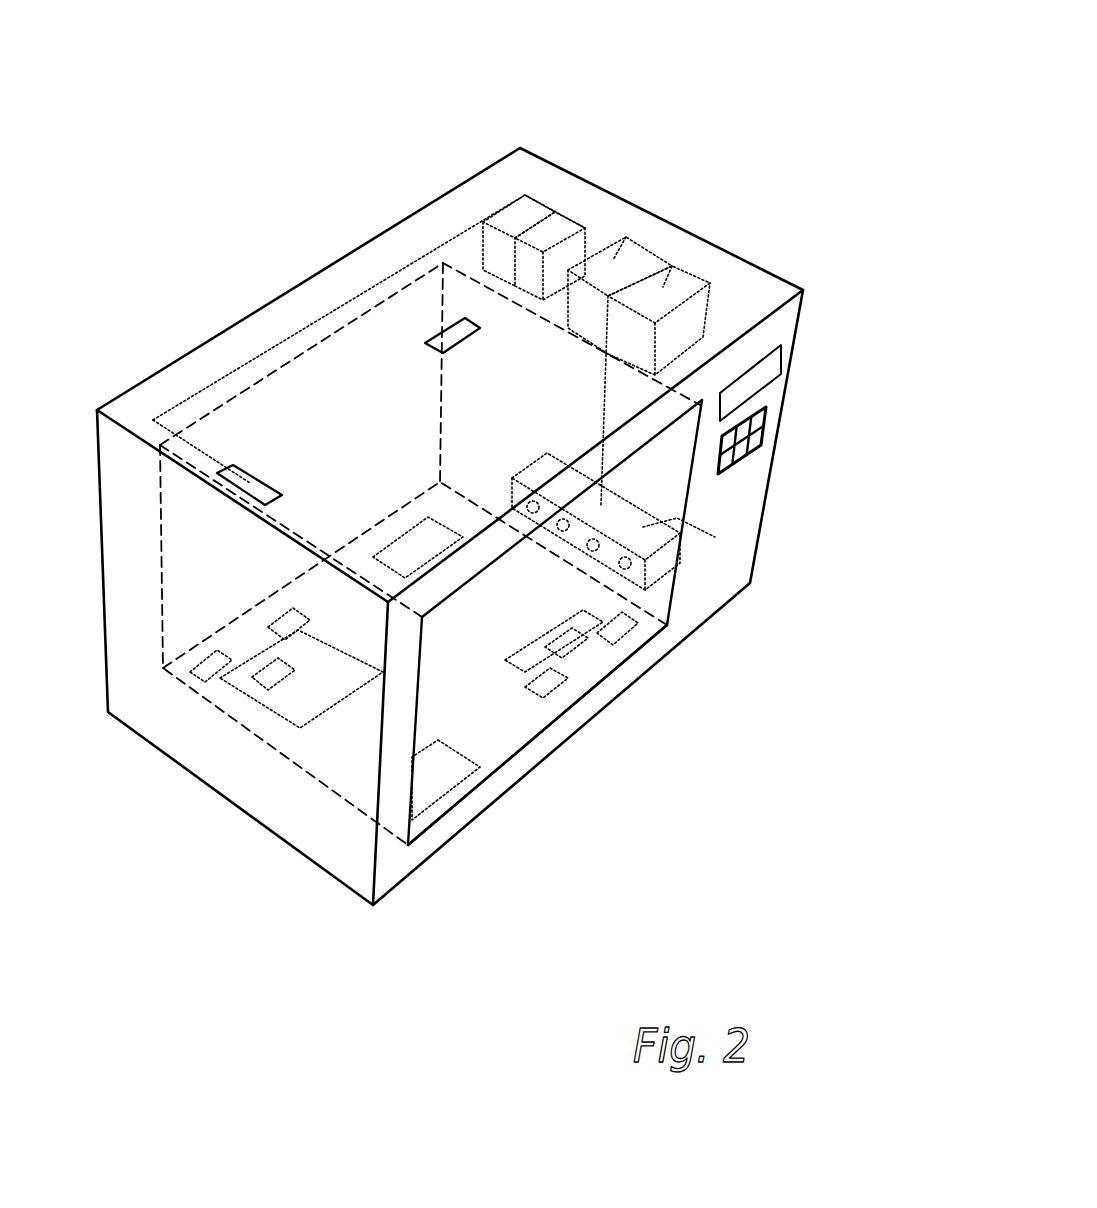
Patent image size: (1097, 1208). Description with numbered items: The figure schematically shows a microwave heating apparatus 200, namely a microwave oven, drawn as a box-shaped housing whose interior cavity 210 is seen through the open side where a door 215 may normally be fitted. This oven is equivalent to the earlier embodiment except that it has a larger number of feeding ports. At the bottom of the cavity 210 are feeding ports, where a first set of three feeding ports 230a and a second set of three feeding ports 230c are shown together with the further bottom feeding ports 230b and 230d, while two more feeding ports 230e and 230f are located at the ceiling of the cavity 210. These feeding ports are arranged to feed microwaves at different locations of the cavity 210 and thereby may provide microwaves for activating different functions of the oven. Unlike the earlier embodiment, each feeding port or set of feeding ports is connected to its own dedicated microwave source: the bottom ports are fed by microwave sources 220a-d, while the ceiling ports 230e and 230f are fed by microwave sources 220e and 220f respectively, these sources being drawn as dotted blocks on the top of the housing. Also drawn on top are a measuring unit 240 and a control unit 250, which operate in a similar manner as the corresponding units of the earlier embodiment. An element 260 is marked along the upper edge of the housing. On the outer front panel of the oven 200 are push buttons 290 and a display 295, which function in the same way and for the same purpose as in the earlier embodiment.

The microwave heating apparatus 200 is at (682, 92).
The cavity 210 is at (487, 708).
The door 215 is at (533, 712).
The microwave sources 220a-d is at (643, 527).
The microwave source 220e is at (555, 235).
The microwave source 220f is at (520, 223).
The first set of three feeding ports 230a is at (604, 658).
The feeding port 230b is at (443, 773).
The second set of three feeding ports 230c is at (243, 652).
The feeding port 230d is at (407, 557).
The feeding port 230e is at (442, 333).
The feeding port 230f is at (260, 490).
The measuring unit 240 is at (627, 238).
The control unit 250 is at (677, 268).
The lid seal 260 is at (345, 298).
The push buttons 290 is at (757, 423).
The display 295 is at (762, 382).